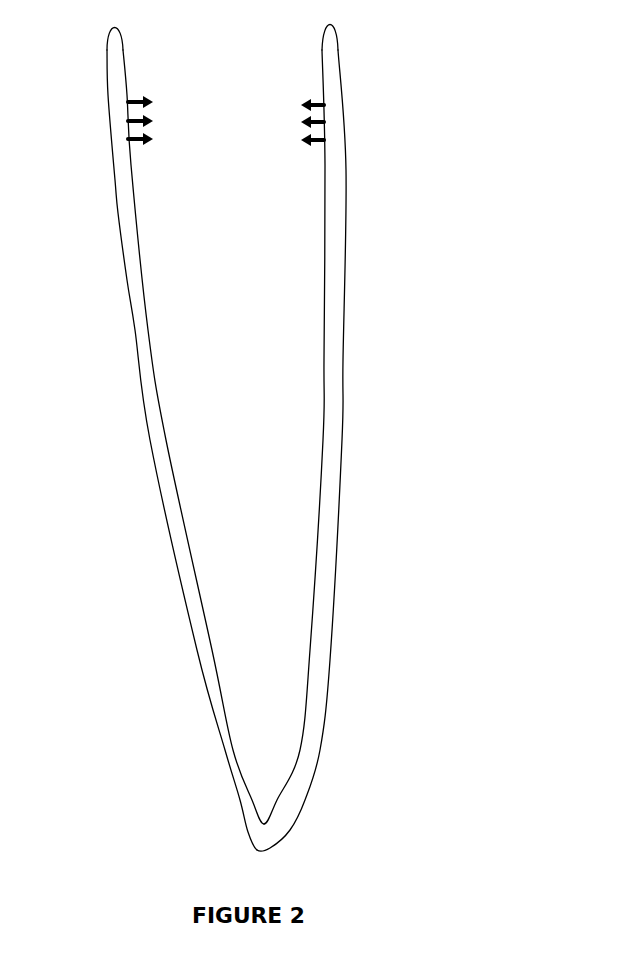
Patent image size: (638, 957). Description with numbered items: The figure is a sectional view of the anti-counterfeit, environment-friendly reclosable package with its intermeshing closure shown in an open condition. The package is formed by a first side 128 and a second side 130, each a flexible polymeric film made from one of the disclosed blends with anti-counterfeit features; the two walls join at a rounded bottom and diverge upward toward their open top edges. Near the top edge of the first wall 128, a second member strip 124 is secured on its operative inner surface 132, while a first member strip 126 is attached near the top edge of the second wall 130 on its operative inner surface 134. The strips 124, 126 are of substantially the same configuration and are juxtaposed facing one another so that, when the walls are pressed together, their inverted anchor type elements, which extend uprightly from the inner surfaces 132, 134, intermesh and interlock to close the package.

The second member strip 124 is at (150, 85).
The first member strip 126 is at (308, 88).
The first side 128 is at (129, 376).
The second side 130 is at (347, 362).
The operative inner surface 132 is at (167, 424).
The operative inner surface 134 is at (326, 225).